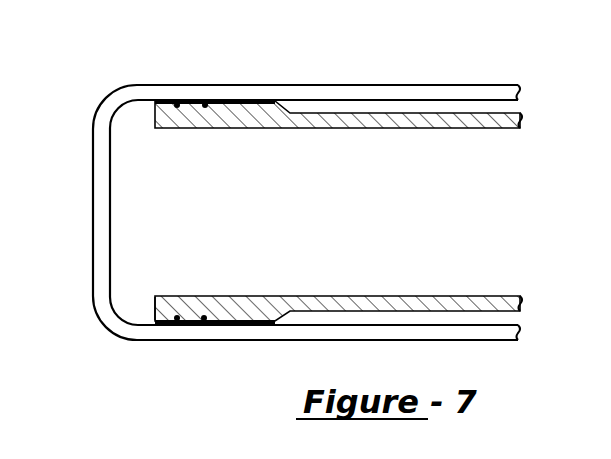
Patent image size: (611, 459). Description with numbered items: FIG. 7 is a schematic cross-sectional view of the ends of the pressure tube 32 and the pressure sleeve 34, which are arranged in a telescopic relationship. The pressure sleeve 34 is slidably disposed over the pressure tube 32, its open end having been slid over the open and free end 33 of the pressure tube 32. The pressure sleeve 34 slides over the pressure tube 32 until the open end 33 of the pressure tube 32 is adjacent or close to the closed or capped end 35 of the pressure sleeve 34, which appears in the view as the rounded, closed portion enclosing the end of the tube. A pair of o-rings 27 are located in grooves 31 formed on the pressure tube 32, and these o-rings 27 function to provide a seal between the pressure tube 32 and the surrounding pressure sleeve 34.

The o-rings 27 is at (203, 321).
The grooves 31 is at (202, 318).
The pressure tube 32 is at (160, 130).
The open end of the pressure tube 33 is at (155, 306).
The pressure sleeve 34 is at (165, 95).
The capped end 35 is at (277, 189).